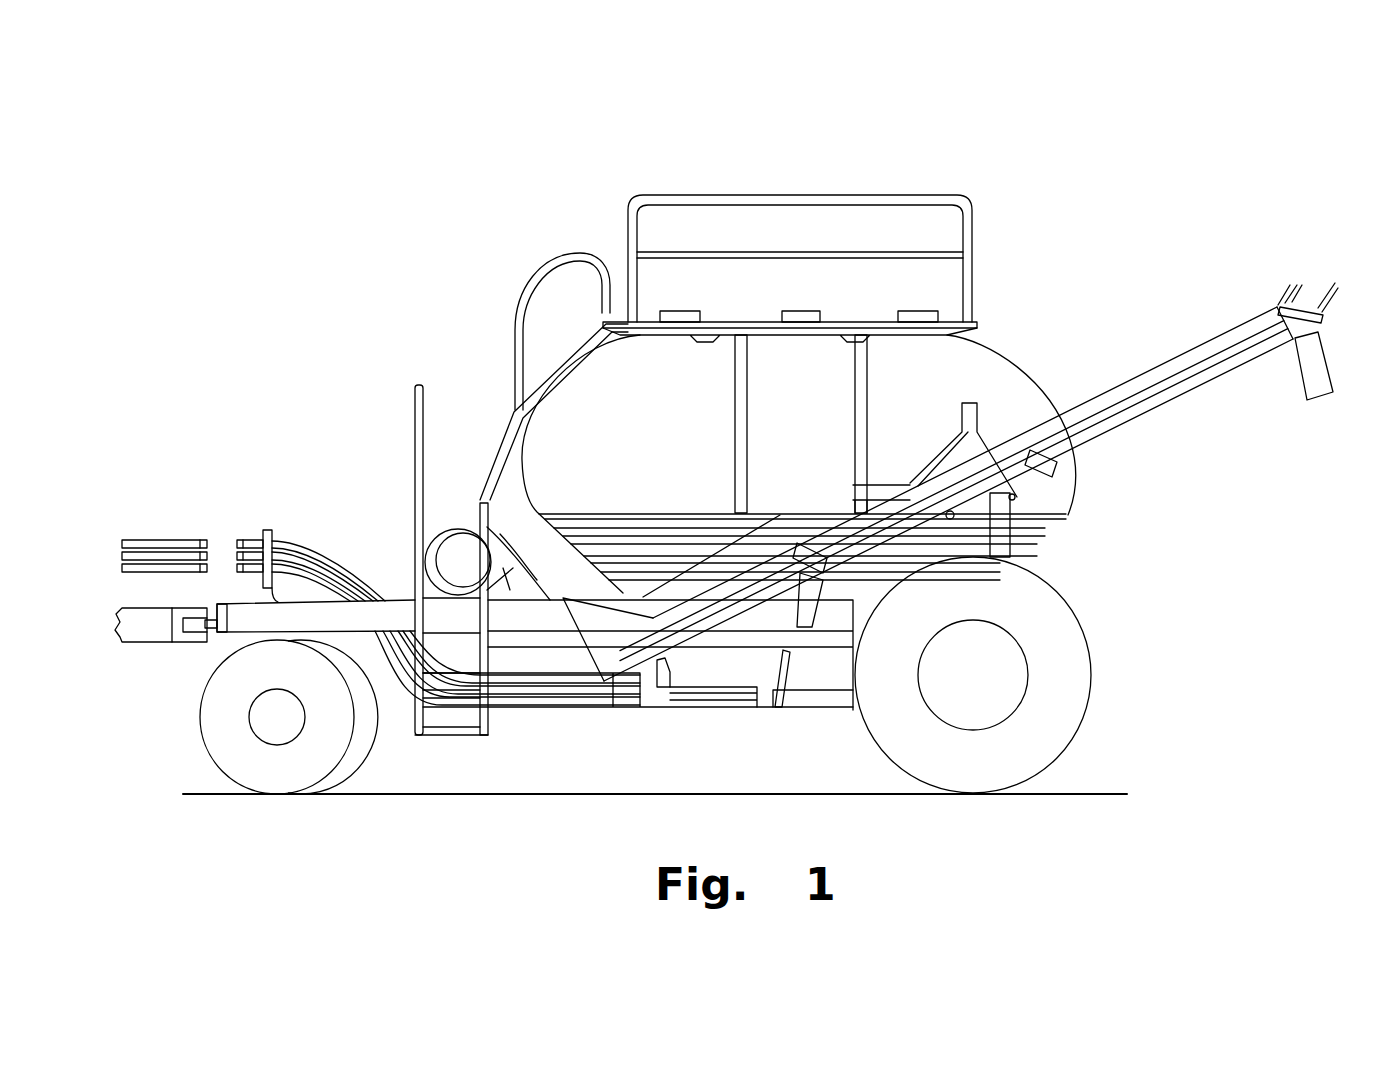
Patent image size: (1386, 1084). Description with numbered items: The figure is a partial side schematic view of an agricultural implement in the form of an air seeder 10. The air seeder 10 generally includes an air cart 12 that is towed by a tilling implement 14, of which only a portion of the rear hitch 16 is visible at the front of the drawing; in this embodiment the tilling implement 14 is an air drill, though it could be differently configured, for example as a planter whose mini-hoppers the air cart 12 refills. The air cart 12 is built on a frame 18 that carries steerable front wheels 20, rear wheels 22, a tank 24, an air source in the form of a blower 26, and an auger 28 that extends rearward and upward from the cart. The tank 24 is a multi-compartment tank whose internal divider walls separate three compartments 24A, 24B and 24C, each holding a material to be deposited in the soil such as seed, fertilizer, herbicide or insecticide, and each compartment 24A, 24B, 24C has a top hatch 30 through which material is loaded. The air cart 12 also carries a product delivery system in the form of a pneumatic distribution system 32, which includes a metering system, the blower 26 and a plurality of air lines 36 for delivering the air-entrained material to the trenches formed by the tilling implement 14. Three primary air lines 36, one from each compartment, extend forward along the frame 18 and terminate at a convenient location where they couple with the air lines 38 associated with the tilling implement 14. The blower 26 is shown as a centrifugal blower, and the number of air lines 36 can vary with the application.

The air seeder 10 is at (238, 468).
The air cart 12 is at (1055, 243).
The tilling implement 14 is at (126, 647).
The rear hitch 16 is at (150, 645).
The frame 18 is at (398, 600).
The steerable front wheels 20 is at (343, 757).
The rear wheels 22 is at (1087, 717).
The tank 24 is at (1027, 375).
The first compartment 24A is at (676, 402).
The second compartment 24B is at (817, 402).
The third compartment 24C is at (945, 402).
The blower 26 is at (497, 540).
The auger 28 is at (1250, 320).
The top hatch 30 is at (677, 311).
The pneumatic distribution system 32 is at (653, 715).
The air lines 36 is at (243, 568).
The air lines 38 is at (160, 567).